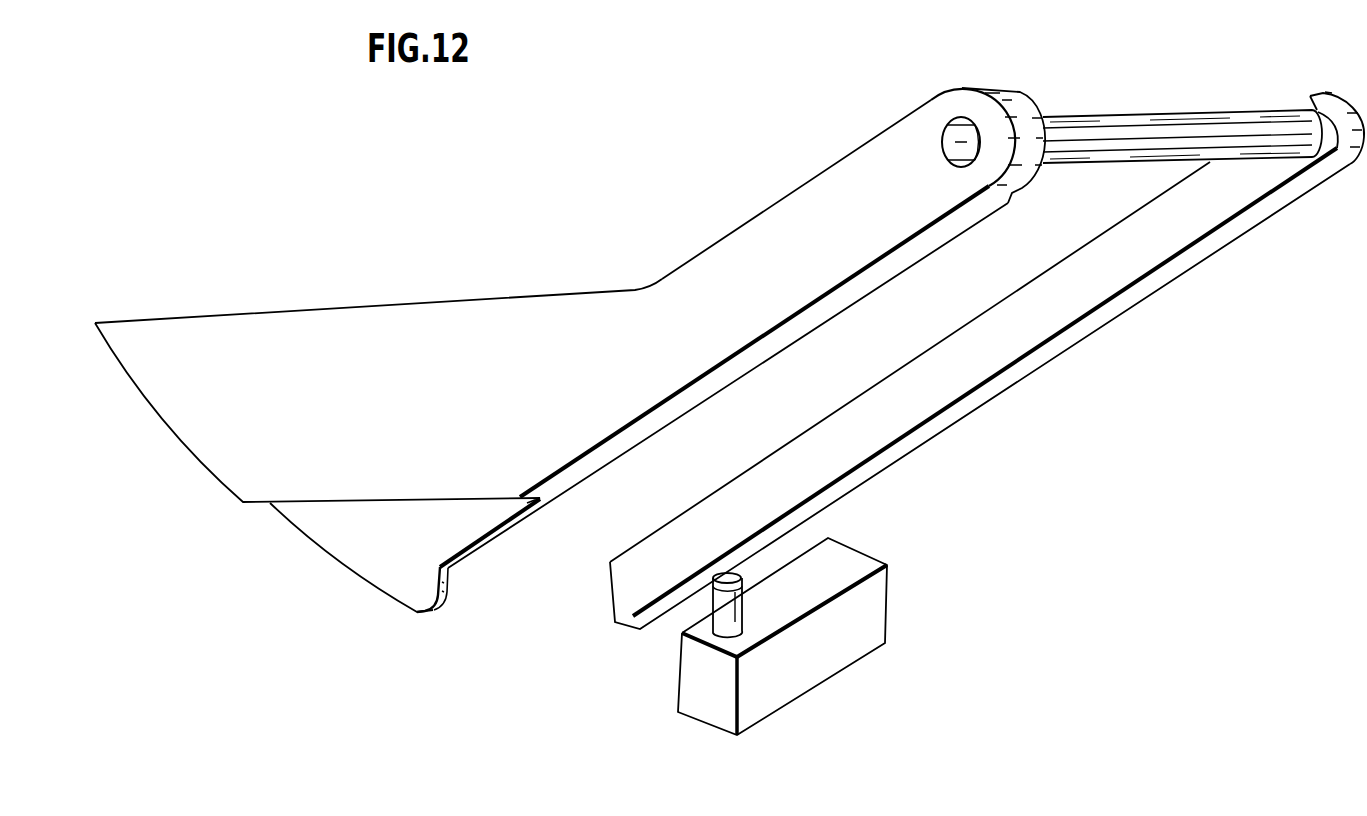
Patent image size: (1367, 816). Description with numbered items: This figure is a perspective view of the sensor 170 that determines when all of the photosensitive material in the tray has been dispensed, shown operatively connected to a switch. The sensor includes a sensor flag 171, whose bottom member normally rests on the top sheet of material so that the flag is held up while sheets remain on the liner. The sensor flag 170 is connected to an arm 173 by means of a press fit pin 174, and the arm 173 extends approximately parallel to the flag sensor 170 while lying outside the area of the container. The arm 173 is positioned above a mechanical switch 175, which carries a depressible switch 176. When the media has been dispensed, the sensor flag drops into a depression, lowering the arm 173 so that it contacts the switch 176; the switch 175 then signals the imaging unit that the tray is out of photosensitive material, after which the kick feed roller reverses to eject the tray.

The sensor 170 is at (820, 182).
The sensor flag 171 is at (548, 307).
The arm 173 is at (970, 332).
The press fit pin 174 is at (1145, 125).
The mechanical switch 175 is at (802, 684).
The switch 176 is at (744, 601).